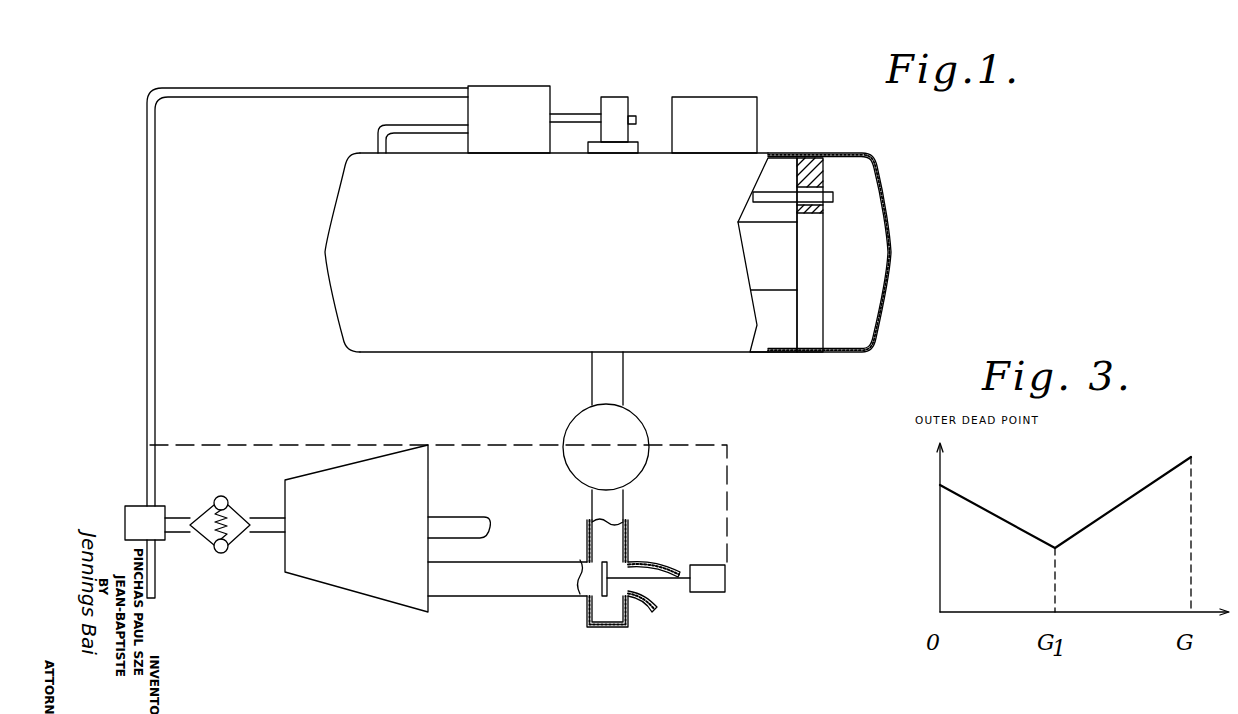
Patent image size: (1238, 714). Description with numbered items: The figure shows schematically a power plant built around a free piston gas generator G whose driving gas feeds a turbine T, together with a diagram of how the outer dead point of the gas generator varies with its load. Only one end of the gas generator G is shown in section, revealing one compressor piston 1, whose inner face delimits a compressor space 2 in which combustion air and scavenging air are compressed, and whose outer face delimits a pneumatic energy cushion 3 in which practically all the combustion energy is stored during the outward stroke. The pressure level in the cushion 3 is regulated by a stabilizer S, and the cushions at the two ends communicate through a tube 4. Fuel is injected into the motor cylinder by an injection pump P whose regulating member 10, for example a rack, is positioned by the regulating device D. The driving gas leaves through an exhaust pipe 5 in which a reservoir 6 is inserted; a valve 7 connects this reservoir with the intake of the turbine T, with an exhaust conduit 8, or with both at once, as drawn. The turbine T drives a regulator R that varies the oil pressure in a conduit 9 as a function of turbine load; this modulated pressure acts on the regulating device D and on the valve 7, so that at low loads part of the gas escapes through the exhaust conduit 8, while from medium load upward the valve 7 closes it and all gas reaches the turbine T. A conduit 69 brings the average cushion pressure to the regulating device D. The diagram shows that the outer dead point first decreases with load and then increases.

The compressor piston 1 is at (809, 345).
The compressor space 2 is at (777, 337).
The pneumatic accumulator of energy (cushion) 3 is at (829, 252).
The tube 4 is at (834, 197).
The exhaust pipe 5 is at (615, 378).
The reservoir 6 is at (640, 467).
The valve 7 is at (612, 566).
The exhaust conduit 8 is at (652, 596).
The conduit 9 is at (155, 225).
The regulating member 10 is at (633, 115).
The conduit 69 is at (376, 133).
The gas generator G is at (352, 304).
The regulating device D is at (545, 94).
The injection pump P is at (606, 106).
The stabilizer S is at (733, 100).
The turbine T is at (318, 571).
The regulator R is at (232, 506).